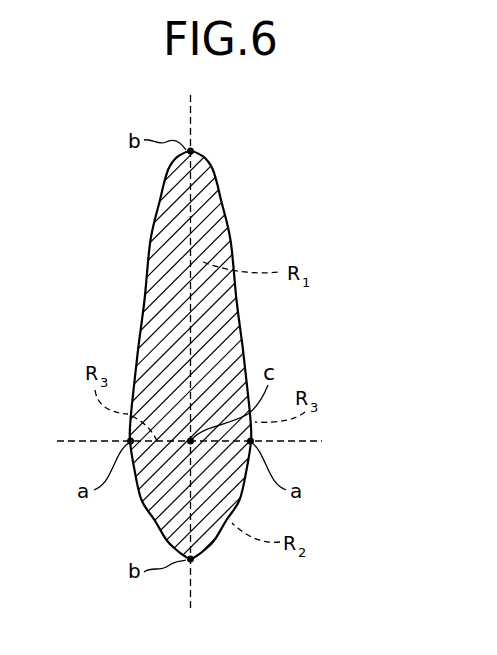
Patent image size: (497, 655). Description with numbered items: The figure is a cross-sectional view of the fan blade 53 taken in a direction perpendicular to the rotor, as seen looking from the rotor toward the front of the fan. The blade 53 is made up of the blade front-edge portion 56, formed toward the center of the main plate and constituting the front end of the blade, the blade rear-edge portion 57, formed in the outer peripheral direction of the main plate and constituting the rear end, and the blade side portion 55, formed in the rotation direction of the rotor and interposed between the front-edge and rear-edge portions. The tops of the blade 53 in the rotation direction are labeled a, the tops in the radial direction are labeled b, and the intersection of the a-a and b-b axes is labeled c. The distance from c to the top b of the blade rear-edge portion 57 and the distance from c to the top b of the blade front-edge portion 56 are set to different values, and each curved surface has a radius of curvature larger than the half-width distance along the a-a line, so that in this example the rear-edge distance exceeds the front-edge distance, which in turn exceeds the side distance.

The blade 53 is at (248, 327).
The blade side portion 55 is at (141, 322).
The blade front-edge portion 56 is at (200, 562).
The blade rear-edge portion 57 is at (196, 151).